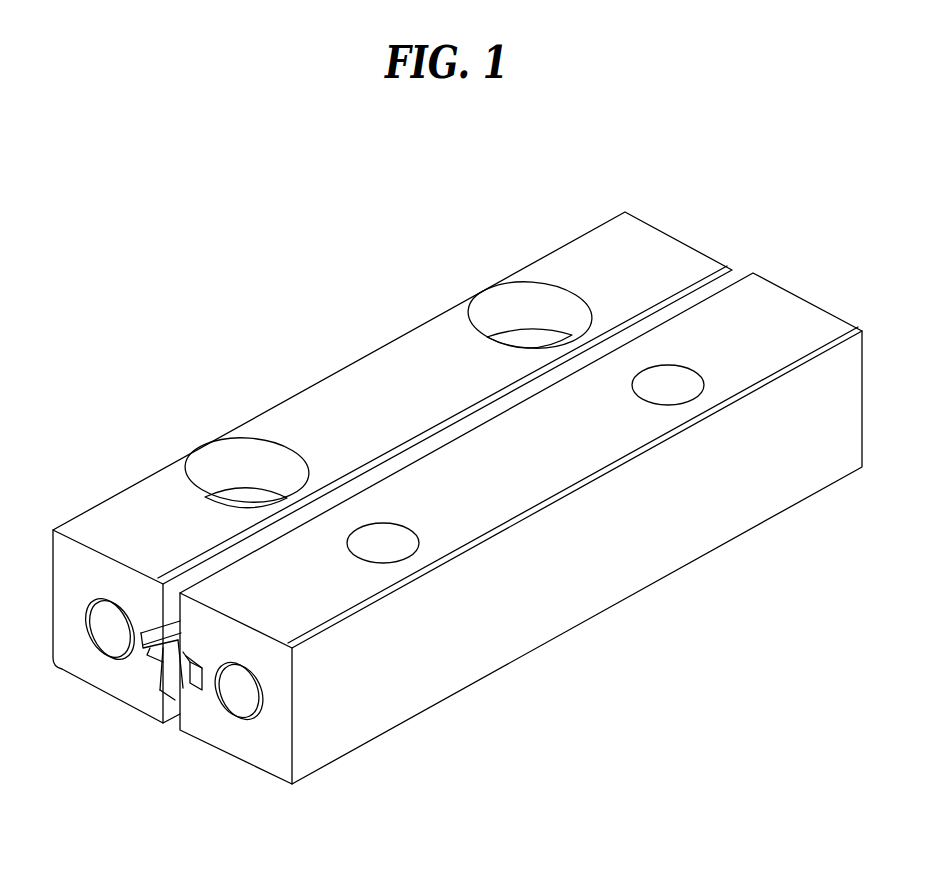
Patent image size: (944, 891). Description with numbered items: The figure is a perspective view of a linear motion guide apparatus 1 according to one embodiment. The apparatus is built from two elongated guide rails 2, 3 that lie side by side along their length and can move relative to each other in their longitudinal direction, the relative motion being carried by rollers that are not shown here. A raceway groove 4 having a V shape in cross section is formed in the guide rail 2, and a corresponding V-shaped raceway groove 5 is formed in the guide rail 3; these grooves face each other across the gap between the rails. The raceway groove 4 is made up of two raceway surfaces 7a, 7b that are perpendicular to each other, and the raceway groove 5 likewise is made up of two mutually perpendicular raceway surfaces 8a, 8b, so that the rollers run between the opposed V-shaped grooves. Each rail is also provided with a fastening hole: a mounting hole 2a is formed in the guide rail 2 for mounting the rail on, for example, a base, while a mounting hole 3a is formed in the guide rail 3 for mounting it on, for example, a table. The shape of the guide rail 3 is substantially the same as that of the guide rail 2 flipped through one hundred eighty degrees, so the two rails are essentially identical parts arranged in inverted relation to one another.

The linear motion guide apparatus 1 is at (341, 263).
The guide rail 2 is at (343, 400).
The mounting hole 2a is at (546, 283).
The guide rail 3 is at (492, 638).
The mounting hole 3a is at (703, 392).
The raceway groove 4 is at (125, 822).
The raceway groove 5 is at (244, 822).
The raceway surface 7a is at (155, 665).
The raceway surface 7b is at (167, 668).
The raceway surface 8a is at (184, 690).
The raceway surface 8b is at (188, 680).